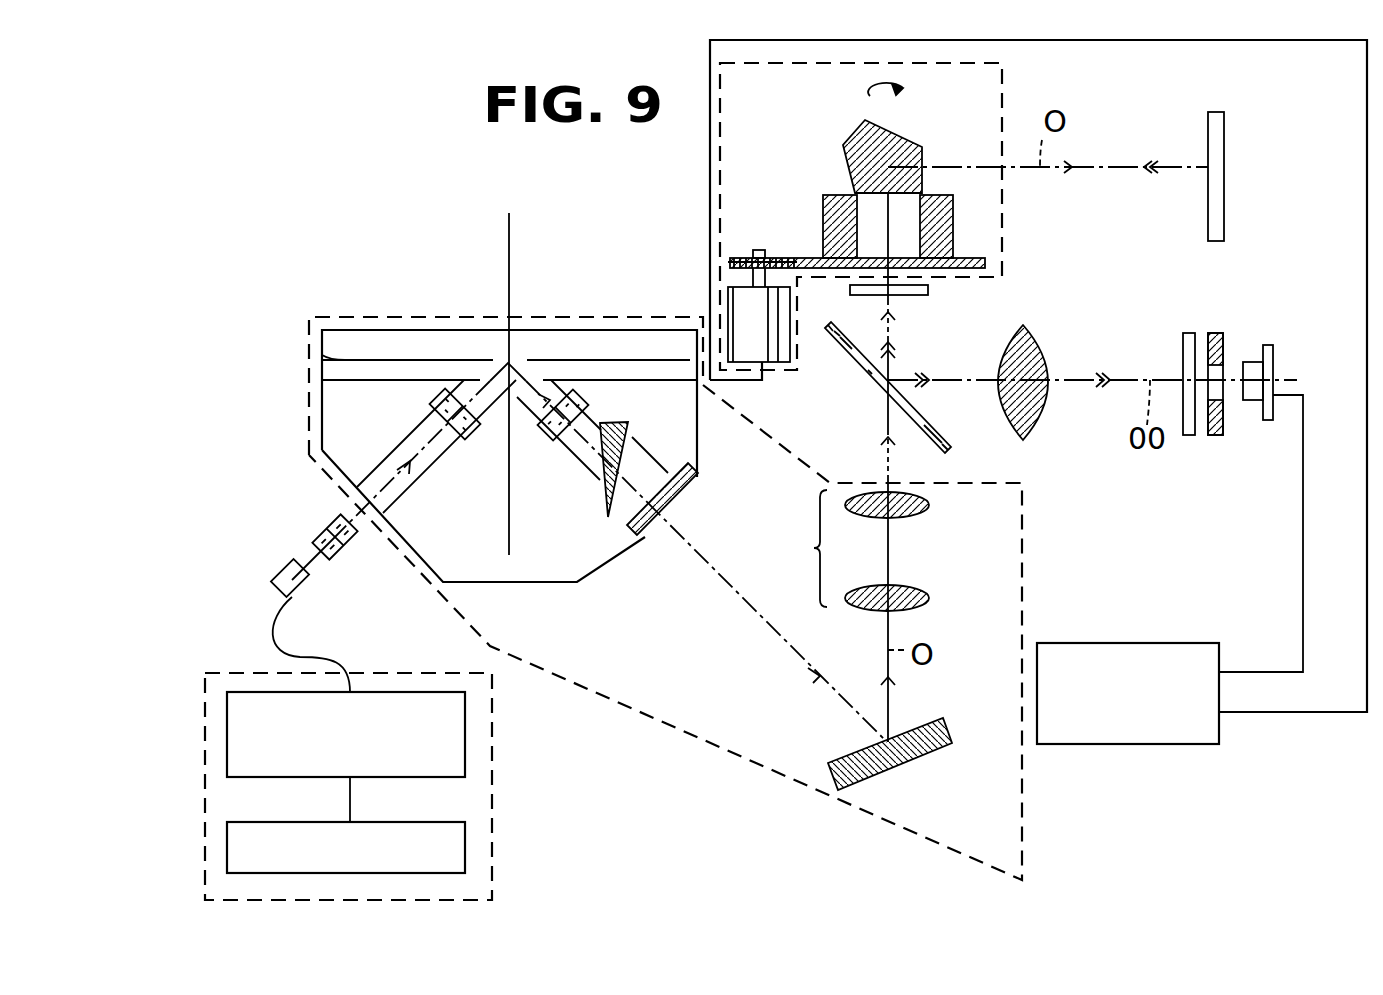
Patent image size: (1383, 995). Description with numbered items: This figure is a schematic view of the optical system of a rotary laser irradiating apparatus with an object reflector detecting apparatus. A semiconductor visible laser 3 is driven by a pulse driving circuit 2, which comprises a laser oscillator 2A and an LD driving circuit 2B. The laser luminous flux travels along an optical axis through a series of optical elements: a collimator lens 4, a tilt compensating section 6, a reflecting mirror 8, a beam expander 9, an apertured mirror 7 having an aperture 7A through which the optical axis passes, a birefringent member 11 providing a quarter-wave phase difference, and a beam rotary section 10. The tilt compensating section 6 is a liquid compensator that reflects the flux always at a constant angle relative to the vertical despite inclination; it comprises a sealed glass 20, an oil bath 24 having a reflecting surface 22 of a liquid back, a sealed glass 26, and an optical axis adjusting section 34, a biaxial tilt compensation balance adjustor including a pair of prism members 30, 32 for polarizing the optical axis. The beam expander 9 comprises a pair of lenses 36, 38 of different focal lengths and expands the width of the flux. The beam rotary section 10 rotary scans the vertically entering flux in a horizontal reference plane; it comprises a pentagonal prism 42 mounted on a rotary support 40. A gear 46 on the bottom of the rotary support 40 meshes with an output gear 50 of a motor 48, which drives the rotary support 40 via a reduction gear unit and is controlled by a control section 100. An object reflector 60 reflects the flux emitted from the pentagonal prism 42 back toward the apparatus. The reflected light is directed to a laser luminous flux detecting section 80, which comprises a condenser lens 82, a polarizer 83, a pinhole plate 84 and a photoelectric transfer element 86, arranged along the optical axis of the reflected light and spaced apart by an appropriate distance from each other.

The pulse driving circuit 2 is at (492, 788).
The laser oscillator 2A is at (465, 847).
The LD driving circuit 2B is at (465, 725).
The semiconductor visible laser 3 is at (293, 598).
The collimator lens 4 is at (346, 552).
The tilt compensating section 6 is at (778, 776).
The apertured mirror 7 is at (950, 455).
The aperture 7A is at (868, 370).
The reflecting mirror 8 is at (940, 745).
The beam expander 9 is at (806, 548).
The beam rotary section 10 is at (1003, 110).
The birefringent member 11 is at (928, 290).
The sealed glass 20 is at (466, 432).
The reflecting surface 22 is at (373, 360).
The oil bath 24 is at (390, 340).
The sealed glass 26 is at (580, 412).
The prism member 30 is at (610, 517).
The prism member 32 is at (697, 480).
The optical axis adjusting section 34 is at (660, 541).
The lens 36 is at (930, 598).
The lens 38 is at (930, 505).
The rotary support 40 is at (953, 222).
The pentagonal prism 42 is at (850, 135).
The gear 46 is at (815, 258).
The motor 48 is at (740, 320).
The output gear 50 is at (728, 262).
The object reflector 60 is at (1208, 131).
The laser luminous flux detecting section 80 is at (1067, 410).
The condenser lens 82 is at (1046, 335).
The polarizer 83 is at (1190, 435).
The pinhole plate 84 is at (1216, 333).
The photoelectric transfer element 86 is at (1273, 360).
The control section 100 is at (1160, 744).